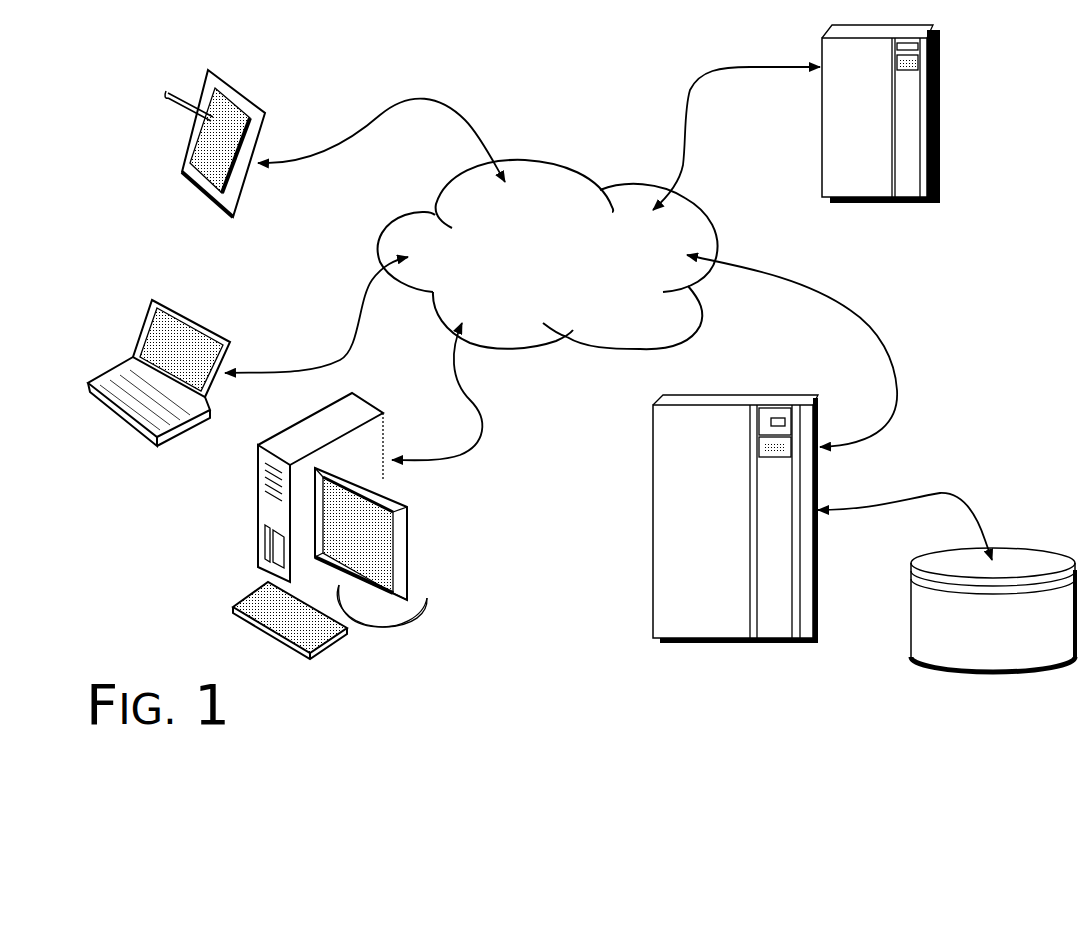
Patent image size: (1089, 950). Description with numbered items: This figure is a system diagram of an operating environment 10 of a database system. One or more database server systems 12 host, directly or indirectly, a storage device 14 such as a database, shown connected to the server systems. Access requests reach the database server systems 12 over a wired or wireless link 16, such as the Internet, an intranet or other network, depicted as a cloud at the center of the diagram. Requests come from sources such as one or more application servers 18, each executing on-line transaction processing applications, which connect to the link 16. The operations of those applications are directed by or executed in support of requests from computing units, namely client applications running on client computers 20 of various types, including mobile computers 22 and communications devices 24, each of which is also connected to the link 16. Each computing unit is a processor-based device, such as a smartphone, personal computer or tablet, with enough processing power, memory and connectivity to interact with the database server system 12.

The operating environment 10 is at (408, 710).
The database server system 12 is at (653, 497).
The storage device 14 is at (1023, 547).
The wired or wireless link 16 is at (645, 333).
The application server 18 is at (822, 117).
The client computer 20 is at (410, 513).
The mobile computer 22 is at (220, 333).
The communications device 24 is at (252, 96).